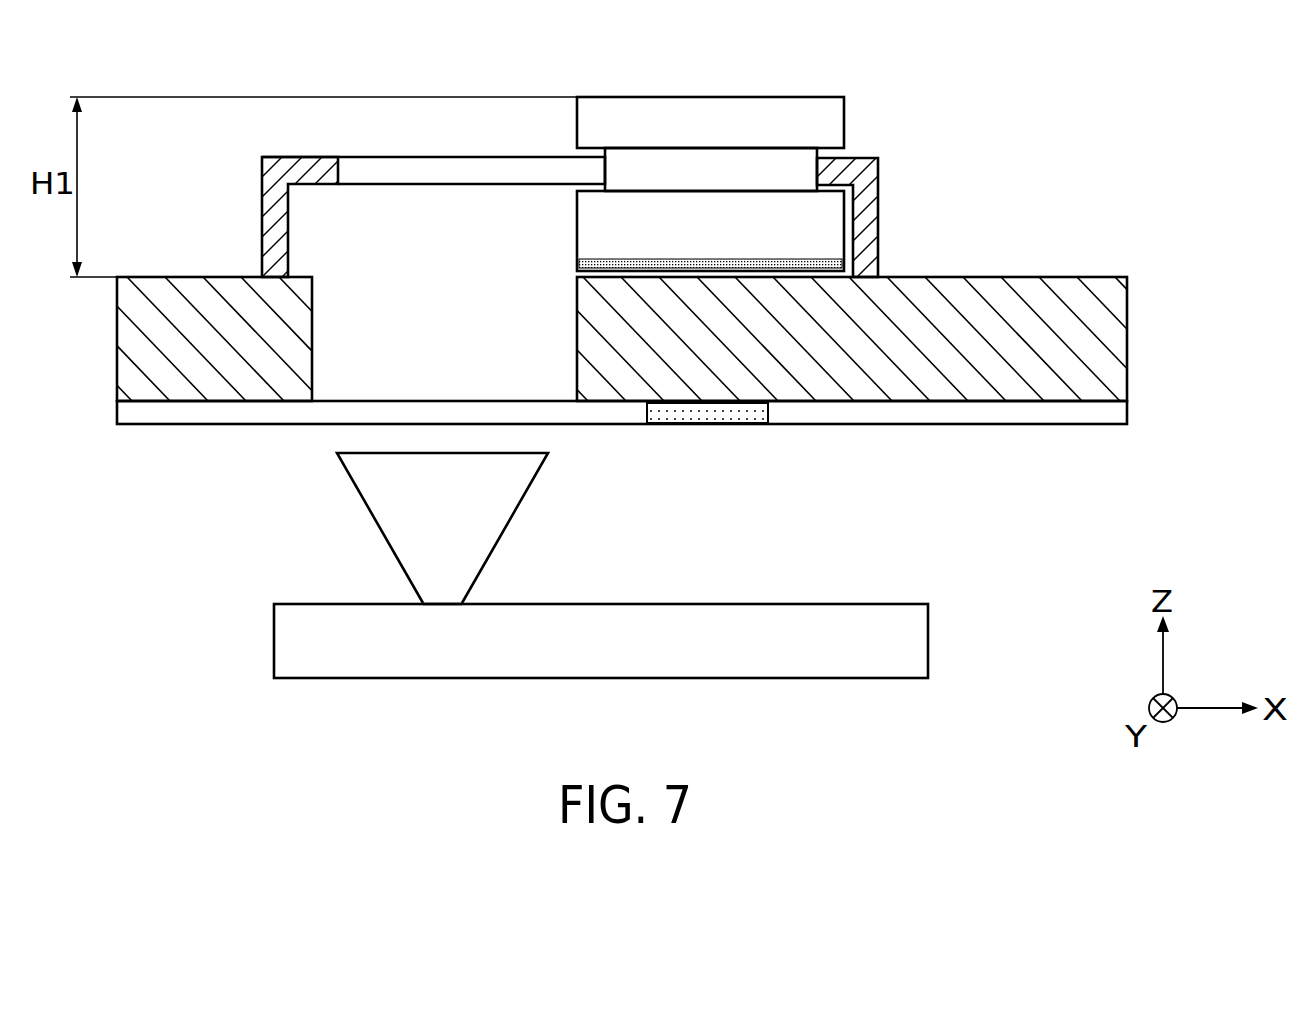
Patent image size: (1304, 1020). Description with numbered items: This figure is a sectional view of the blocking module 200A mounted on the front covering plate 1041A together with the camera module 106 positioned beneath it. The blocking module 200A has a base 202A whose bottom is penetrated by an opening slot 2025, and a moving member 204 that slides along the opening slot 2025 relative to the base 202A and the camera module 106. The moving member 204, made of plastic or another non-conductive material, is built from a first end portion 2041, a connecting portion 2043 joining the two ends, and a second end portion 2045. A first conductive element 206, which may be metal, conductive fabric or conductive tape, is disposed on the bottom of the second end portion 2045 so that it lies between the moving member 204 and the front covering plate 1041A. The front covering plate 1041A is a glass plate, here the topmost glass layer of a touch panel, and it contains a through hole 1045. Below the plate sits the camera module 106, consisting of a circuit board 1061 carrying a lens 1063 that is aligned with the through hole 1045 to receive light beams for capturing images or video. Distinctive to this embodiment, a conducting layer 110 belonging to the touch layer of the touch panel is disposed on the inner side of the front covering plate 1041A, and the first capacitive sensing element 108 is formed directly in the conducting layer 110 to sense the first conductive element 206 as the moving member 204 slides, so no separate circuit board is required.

The blocking module 200A is at (298, 150).
The base 202A is at (264, 172).
The opening slot 2025 is at (270, 244).
The first end portion 2041 is at (820, 123).
The connecting portion 2043 is at (795, 166).
The second end portion 2045 is at (832, 221).
The moving member 204 is at (978, 103).
The first conductive element 206 is at (845, 266).
The through hole 1045 is at (318, 340).
The front covering plate 1041A is at (1100, 340).
The conducting layer 110 is at (1100, 410).
The first capacitive sensing element 108 is at (705, 412).
The camera module 106 is at (288, 533).
The circuit board 1061 is at (903, 640).
The lens 1063 is at (446, 582).